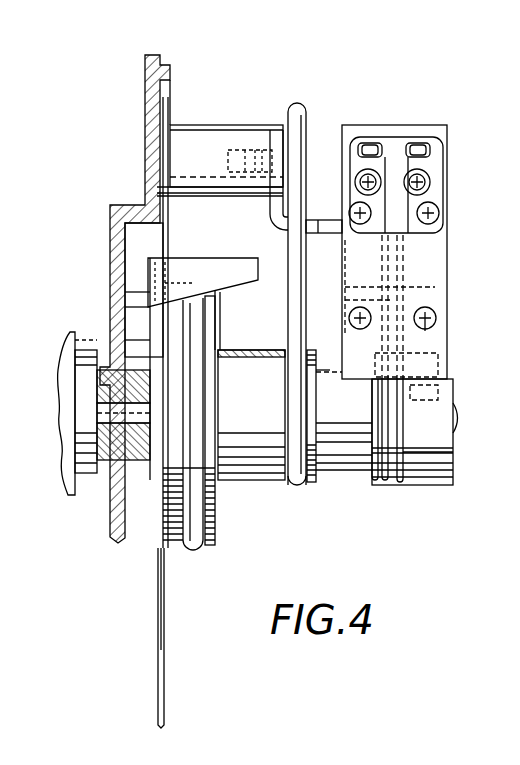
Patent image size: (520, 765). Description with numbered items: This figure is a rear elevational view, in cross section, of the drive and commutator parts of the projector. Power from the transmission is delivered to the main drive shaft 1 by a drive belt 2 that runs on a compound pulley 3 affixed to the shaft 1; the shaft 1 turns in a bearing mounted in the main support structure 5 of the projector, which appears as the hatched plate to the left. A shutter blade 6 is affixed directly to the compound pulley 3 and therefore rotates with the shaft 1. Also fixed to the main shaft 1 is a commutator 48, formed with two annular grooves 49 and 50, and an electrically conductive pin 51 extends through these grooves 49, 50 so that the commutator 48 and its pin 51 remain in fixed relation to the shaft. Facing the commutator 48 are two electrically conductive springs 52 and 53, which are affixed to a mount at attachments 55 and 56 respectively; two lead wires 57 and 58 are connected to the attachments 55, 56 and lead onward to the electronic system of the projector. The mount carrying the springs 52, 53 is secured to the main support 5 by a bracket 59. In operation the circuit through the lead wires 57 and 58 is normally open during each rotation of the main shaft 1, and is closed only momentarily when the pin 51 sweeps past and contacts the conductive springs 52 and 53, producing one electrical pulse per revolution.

The main drive shaft 1 is at (100, 407).
The drive belt 2 is at (192, 530).
The compound pulley 3 is at (215, 323).
The main support structure 5 is at (147, 106).
The shutter blade 6 is at (163, 615).
The commutator 48 is at (448, 462).
The annular groove 49 is at (385, 480).
The annular groove 50 is at (400, 483).
The electrically conductive pin 51 is at (427, 420).
The electrically conductive spring 52 is at (383, 447).
The electrically conductive spring 53 is at (405, 452).
The attachment 55 is at (385, 199).
The attachment 56 is at (428, 181).
The lead wire 57 is at (378, 144).
The lead wire 58 is at (426, 142).
The bracket 59 is at (272, 143).